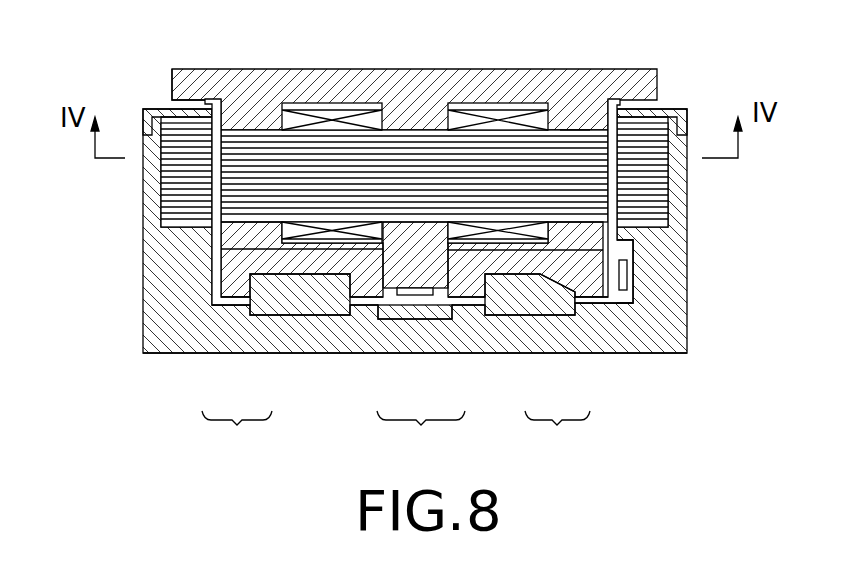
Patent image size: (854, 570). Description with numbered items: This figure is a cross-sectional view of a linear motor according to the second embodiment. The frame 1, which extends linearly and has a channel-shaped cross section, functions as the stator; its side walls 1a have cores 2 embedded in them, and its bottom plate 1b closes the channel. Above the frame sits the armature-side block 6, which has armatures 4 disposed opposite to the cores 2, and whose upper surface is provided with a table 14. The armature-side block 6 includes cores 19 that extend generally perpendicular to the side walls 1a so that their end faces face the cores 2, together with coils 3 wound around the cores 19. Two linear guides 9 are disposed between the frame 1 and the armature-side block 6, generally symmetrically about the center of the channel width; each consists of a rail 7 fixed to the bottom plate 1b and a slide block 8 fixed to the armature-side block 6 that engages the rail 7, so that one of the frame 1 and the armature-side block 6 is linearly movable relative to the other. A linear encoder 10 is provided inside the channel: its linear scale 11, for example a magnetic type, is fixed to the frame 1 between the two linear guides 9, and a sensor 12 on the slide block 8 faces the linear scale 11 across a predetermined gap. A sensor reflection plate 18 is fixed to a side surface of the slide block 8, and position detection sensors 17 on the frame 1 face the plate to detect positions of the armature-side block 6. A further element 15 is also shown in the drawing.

The frame 1 is at (160, 305).
The side walls 1a is at (153, 214).
The bottom plate 1b is at (186, 346).
The cores 2 is at (178, 162).
The coils 3 is at (330, 104).
The armatures 4 is at (274, 153).
The armature-side block 6 is at (413, 97).
The rails 7 is at (275, 292).
The slide blocks 8 is at (236, 300).
The linear guides 9 is at (396, 432).
The linear encoder 10 is at (421, 432).
The linear scale 11 is at (420, 292).
The sensor 12 is at (410, 312).
The table 14 is at (178, 87).
The bracket 15 is at (211, 100).
The position detection sensors 17 is at (625, 274).
The sensor reflection plate 18 is at (618, 300).
The cores 19 is at (573, 145).